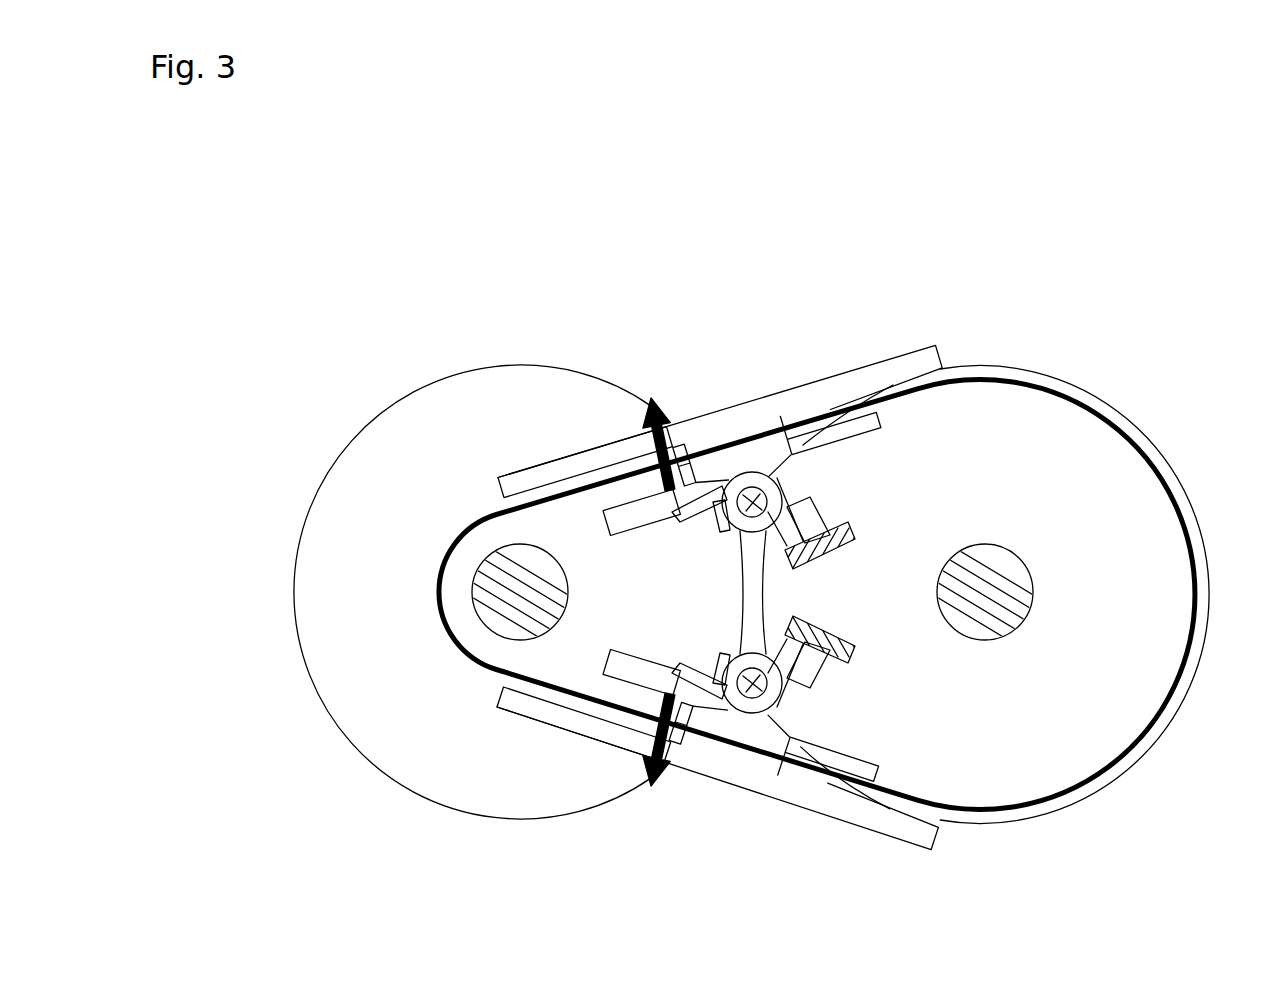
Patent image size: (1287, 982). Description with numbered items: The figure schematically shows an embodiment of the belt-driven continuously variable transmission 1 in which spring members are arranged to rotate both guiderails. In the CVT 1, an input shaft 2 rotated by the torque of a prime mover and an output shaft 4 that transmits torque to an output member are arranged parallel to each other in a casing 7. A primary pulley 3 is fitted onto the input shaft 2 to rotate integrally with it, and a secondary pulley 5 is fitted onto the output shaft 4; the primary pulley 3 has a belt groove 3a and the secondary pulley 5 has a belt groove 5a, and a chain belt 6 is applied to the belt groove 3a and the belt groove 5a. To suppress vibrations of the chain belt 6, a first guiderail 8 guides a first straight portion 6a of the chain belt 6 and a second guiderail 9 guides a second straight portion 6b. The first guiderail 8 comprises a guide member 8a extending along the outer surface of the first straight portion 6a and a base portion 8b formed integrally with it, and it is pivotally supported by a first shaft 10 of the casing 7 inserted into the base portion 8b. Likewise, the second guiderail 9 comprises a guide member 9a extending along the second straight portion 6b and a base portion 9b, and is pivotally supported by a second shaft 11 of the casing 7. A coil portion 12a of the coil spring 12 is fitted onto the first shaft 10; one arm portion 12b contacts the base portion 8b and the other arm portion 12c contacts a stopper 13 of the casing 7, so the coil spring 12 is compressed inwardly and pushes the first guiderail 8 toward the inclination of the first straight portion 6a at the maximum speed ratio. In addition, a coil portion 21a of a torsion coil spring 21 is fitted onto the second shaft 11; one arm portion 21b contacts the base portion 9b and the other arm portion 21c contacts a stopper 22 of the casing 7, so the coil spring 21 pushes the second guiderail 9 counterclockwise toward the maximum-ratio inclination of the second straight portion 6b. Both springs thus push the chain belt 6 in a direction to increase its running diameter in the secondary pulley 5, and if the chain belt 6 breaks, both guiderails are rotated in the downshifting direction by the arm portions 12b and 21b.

The belt-driven continuously variable transmission 1 is at (961, 251).
The input shaft 2 is at (1001, 577).
The primary pulley 3 is at (1196, 490).
The belt groove 3a is at (1073, 757).
The output shaft 4 is at (545, 571).
The secondary pulley 5 is at (293, 586).
The belt groove 5a is at (352, 712).
The chain belt 6 is at (477, 517).
The first straight portion 6a is at (805, 415).
The second straight portion 6b is at (588, 702).
The casing 7 is at (840, 540).
The first guiderail 8 is at (761, 369).
The guide member 8a is at (717, 435).
The base portion 8b is at (787, 483).
The second guiderail 9 is at (772, 824).
The guide member 9a is at (698, 747).
The base portion 9b is at (713, 678).
The first shaft 10 is at (757, 520).
The second shaft 11 is at (758, 689).
The coil spring 12 is at (730, 549).
The coil portion 12a is at (718, 512).
The arm portion 12b is at (678, 505).
The arm portion 12c is at (782, 533).
The stopper 13 is at (813, 510).
The torsion coil spring 21 is at (747, 633).
The coil portion 21a is at (750, 707).
The arm portion 21b is at (677, 670).
The arm portion 21c is at (800, 652).
The stopper 22 is at (822, 676).